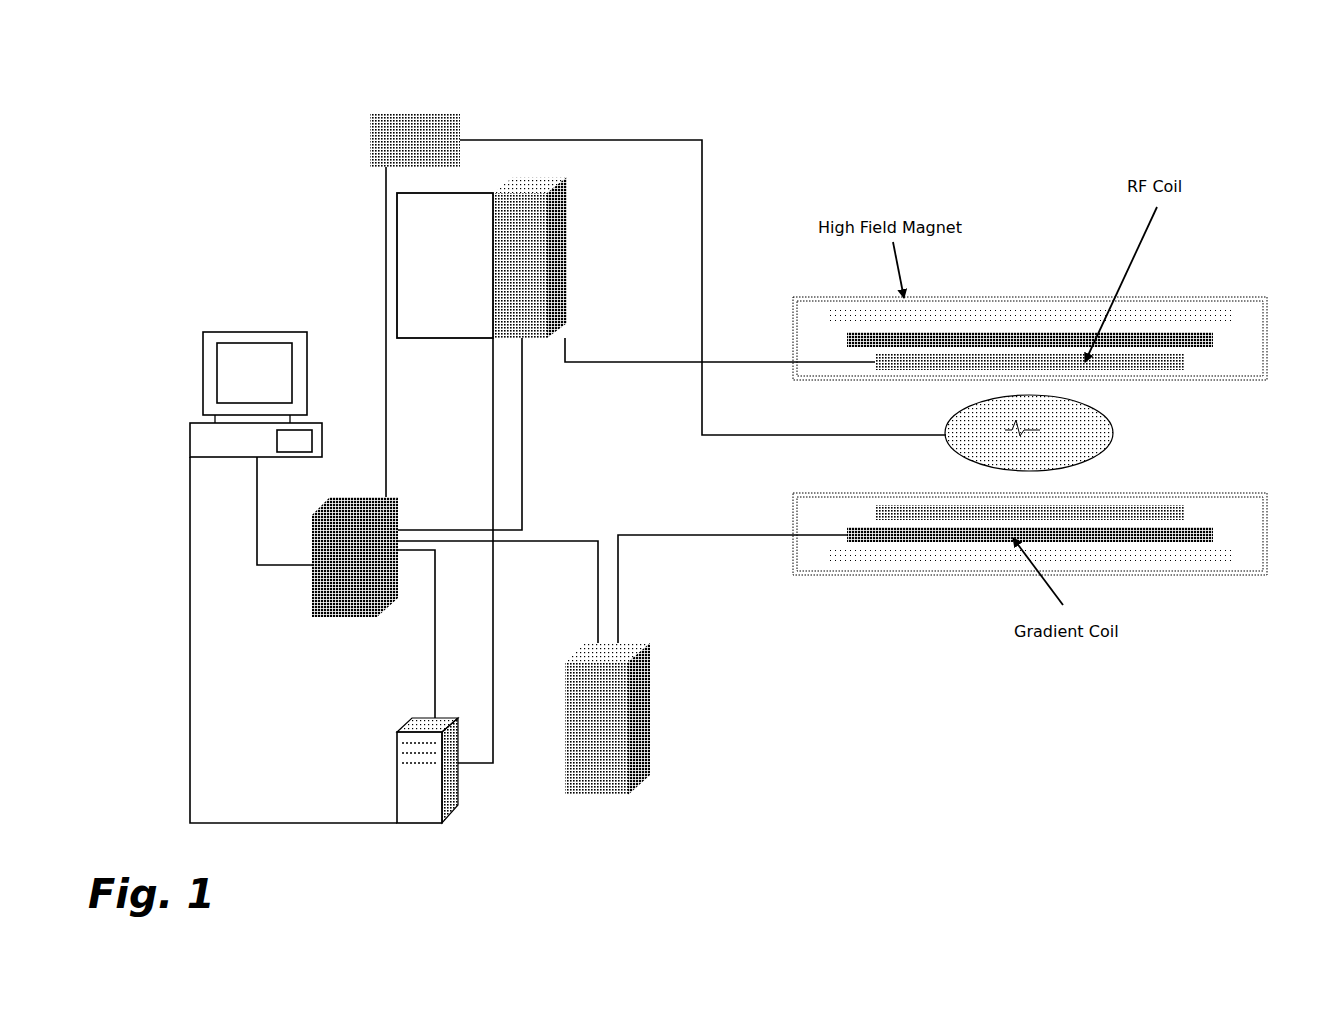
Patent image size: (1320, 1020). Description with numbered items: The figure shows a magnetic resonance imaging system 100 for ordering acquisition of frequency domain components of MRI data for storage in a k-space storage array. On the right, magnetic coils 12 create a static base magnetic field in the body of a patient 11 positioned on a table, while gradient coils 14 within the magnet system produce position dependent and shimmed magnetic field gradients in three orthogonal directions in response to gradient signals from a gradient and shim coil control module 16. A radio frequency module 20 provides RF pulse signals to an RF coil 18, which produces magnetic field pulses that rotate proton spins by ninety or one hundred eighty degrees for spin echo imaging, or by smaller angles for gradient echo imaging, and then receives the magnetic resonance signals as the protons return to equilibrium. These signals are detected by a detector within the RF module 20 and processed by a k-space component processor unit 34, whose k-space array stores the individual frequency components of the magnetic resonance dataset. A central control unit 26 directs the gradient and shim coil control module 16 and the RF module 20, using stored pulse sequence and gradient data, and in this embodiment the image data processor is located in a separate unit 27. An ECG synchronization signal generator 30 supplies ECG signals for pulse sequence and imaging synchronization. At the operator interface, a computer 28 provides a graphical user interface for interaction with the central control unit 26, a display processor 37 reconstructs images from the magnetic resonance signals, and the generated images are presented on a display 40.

The system 100 is at (85, 62).
The patient 11 is at (1085, 443).
The magnetic coils 12 is at (1178, 315).
The gradient coils 14 is at (1205, 340).
The gradient and shim coil control module 16 is at (643, 673).
The RF coil 18 is at (1185, 362).
The radio frequency (RF) module 20 is at (547, 193).
The central control unit 26 is at (342, 578).
The separate unit 27 is at (397, 763).
The computer 28 is at (190, 430).
The electrocardiogram (ECG) synchronization signal generator 30 is at (370, 141).
The k-space component processor unit 34 is at (397, 247).
The display processor 37 is at (287, 442).
The display 40 is at (253, 373).